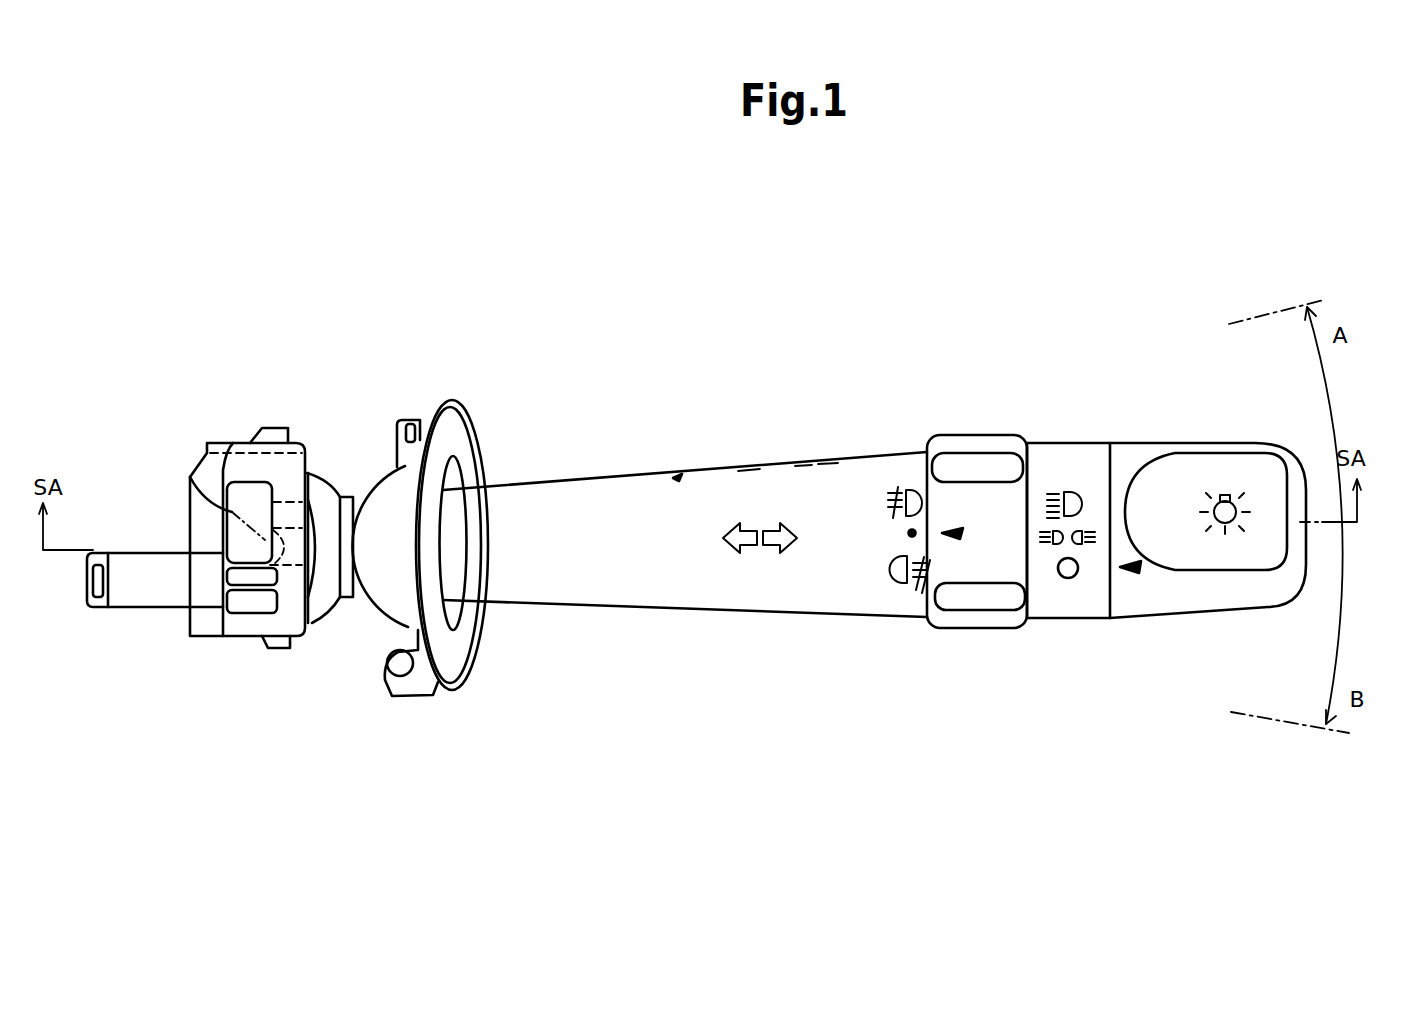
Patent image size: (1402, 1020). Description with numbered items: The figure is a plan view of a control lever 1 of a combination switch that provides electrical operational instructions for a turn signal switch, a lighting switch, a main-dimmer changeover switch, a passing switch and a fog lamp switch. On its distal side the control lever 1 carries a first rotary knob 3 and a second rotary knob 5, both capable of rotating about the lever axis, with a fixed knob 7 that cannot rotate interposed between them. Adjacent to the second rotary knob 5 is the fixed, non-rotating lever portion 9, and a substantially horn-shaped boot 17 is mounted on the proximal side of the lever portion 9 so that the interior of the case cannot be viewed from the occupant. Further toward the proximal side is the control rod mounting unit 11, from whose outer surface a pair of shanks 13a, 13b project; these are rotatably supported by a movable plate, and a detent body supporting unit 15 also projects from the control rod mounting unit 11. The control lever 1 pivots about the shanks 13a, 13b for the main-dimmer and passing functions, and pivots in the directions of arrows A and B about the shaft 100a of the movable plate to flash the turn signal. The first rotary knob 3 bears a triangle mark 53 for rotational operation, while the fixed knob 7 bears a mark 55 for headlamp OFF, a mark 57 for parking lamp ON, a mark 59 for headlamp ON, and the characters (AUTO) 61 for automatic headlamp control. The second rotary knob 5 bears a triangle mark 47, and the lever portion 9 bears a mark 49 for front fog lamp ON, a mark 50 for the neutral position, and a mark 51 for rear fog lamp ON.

The control lever 1 is at (874, 543).
The first rotary knob 3 is at (1195, 441).
The second rotary knob 5 is at (985, 436).
The fixed knob 7 is at (1060, 444).
The lever portion 9 is at (642, 475).
The control rod mounting unit 11 is at (208, 540).
The shank 13a is at (272, 428).
The shank 13b is at (287, 649).
The detent body supporting unit 15 is at (140, 597).
The boot 17 is at (437, 404).
The triangle mark 47 is at (960, 538).
The mark 49 is at (920, 474).
The mark 50 is at (910, 535).
The mark 51 is at (896, 586).
The triangle mark 53 is at (1136, 572).
The mark 55 is at (1068, 579).
The mark 57 is at (1077, 542).
The mark 59 is at (1090, 497).
The characters (AUTO) 61 is at (1080, 460).
The shaft 100a is at (190, 477).